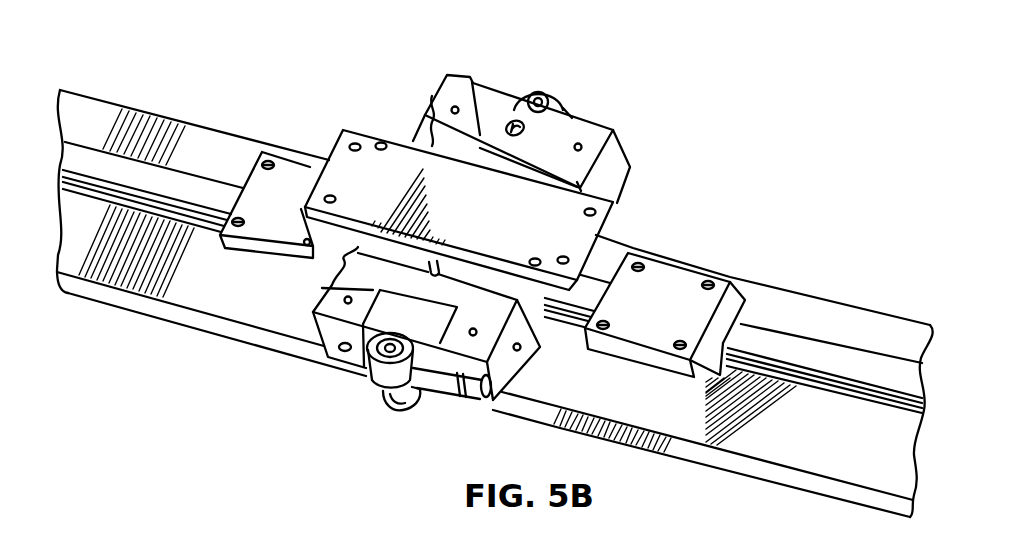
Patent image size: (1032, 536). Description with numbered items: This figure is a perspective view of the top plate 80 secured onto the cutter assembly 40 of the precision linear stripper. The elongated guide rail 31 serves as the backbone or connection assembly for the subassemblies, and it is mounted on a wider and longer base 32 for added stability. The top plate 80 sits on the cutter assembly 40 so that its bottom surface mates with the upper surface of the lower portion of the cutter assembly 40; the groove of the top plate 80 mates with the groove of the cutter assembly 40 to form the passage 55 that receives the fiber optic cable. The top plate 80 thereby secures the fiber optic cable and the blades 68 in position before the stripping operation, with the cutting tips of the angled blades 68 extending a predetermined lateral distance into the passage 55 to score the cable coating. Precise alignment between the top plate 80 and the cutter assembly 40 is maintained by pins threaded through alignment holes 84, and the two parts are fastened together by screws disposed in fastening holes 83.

The guide rail 31 is at (97, 162).
The base 32 is at (200, 147).
The cutter assembly 40 is at (432, 96).
The passage 55 is at (630, 247).
The blades 68 is at (480, 150).
The top plate 80 is at (600, 257).
The fastening holes 83 is at (330, 195).
The alignment holes 84 is at (382, 142).